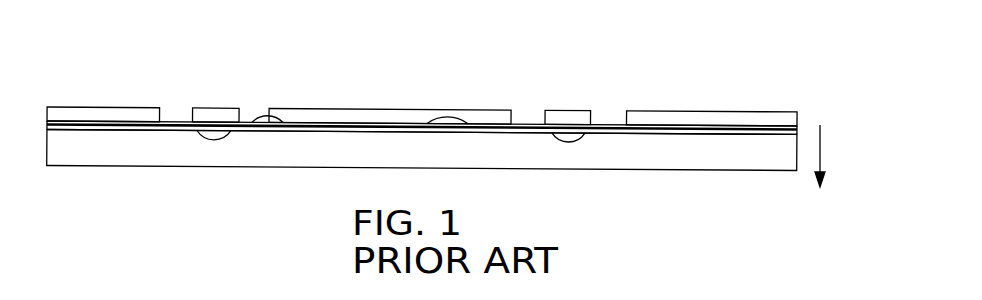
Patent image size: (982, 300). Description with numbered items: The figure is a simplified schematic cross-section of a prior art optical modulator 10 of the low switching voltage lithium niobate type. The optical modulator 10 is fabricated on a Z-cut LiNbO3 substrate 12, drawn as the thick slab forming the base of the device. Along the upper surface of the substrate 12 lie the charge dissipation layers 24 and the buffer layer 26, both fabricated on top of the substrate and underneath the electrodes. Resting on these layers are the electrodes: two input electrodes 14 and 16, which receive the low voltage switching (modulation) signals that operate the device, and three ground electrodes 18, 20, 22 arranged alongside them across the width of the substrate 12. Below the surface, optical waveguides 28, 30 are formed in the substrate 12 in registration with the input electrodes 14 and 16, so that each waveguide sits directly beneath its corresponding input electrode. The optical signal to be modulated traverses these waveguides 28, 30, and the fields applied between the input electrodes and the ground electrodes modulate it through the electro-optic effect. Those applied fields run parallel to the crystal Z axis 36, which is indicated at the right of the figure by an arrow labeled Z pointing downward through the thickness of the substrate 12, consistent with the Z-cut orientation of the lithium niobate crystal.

The optical modulator 10 is at (753, 72).
The Z-cut LiNbO3 substrate 12 is at (727, 160).
The input electrode 14 is at (208, 112).
The input electrode 16 is at (563, 115).
The ground electrode 18 is at (77, 111).
The ground electrode 20 is at (312, 112).
The ground electrode 22 is at (655, 120).
The charge dissipation layer 24 is at (281, 118).
The buffer layer 26 is at (468, 125).
The optical waveguide 28 is at (213, 137).
The optical waveguide 30 is at (573, 140).
The crystal Z axis 36 is at (821, 138).